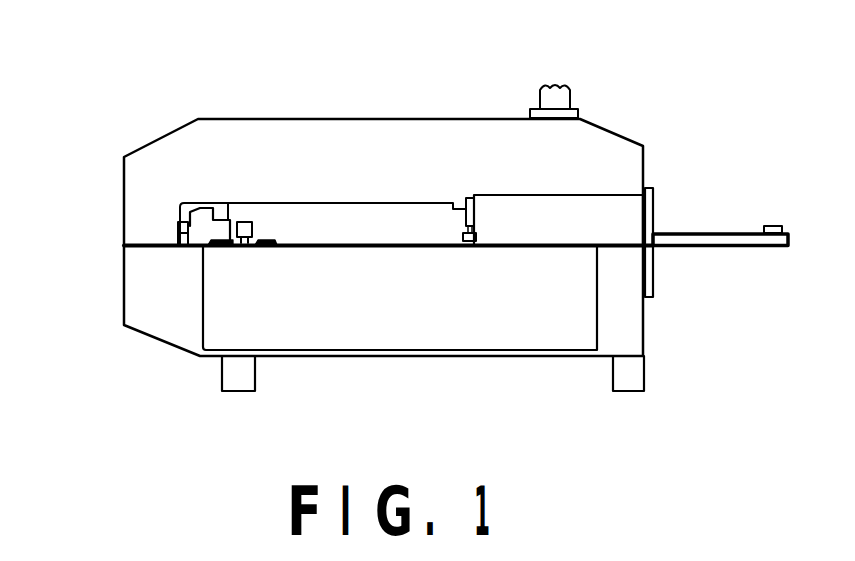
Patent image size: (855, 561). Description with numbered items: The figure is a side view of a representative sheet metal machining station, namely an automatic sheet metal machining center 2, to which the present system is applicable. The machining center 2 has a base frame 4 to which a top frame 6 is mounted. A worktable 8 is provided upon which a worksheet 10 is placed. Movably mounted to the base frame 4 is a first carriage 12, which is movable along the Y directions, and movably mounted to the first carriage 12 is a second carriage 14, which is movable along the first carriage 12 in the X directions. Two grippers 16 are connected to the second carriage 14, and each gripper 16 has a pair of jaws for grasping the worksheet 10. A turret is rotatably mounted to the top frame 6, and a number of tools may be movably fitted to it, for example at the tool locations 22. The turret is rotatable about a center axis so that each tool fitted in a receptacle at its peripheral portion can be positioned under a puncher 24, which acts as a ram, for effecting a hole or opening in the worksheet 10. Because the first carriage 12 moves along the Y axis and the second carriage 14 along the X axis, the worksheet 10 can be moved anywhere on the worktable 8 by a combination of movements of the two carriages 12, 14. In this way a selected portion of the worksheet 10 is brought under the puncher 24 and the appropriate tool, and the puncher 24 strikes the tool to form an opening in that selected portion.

The automatic sheet metal machining center 2 is at (108, 305).
The base frame 4 is at (646, 313).
The top frame 6 is at (165, 135).
The worktable 8 is at (431, 248).
The worksheet 10 is at (298, 243).
The first carriage 12 is at (203, 225).
The second carriage 14 is at (243, 222).
The grippers 16 is at (257, 249).
The tool locations 22 is at (772, 225).
The puncher 24 is at (458, 198).